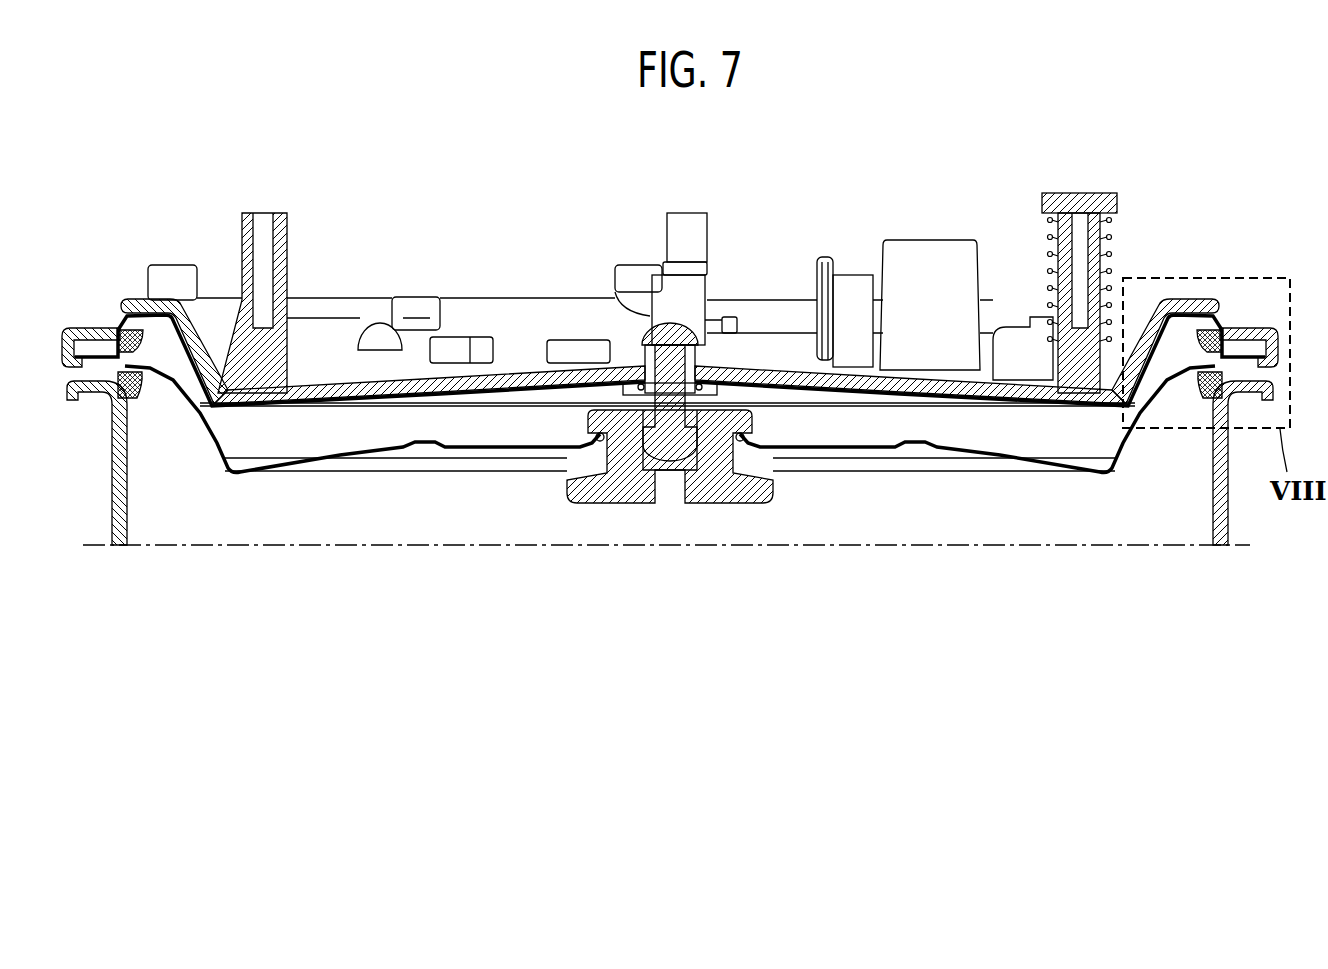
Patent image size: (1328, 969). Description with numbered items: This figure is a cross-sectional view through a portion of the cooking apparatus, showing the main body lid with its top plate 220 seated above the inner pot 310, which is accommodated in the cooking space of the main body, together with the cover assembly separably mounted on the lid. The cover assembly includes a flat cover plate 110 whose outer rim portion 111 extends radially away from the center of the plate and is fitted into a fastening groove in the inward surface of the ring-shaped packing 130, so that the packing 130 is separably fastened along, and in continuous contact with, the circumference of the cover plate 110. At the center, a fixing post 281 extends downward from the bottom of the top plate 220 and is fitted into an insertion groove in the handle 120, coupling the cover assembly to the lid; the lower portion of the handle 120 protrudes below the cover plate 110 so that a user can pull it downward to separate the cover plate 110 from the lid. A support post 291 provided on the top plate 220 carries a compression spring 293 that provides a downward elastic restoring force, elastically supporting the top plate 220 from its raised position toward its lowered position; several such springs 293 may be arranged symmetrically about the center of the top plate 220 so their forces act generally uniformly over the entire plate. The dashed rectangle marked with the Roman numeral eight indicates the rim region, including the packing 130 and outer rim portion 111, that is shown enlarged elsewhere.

The cover plate 110 is at (967, 462).
The outer rim portion 111 is at (1222, 356).
The handle 120 is at (720, 492).
The packing 130 is at (1253, 345).
The top plate 220 is at (1182, 303).
The fixing post 281 is at (667, 445).
The support post 291 is at (1060, 237).
The spring 293 is at (1103, 253).
The inner pot 310 is at (1222, 510).